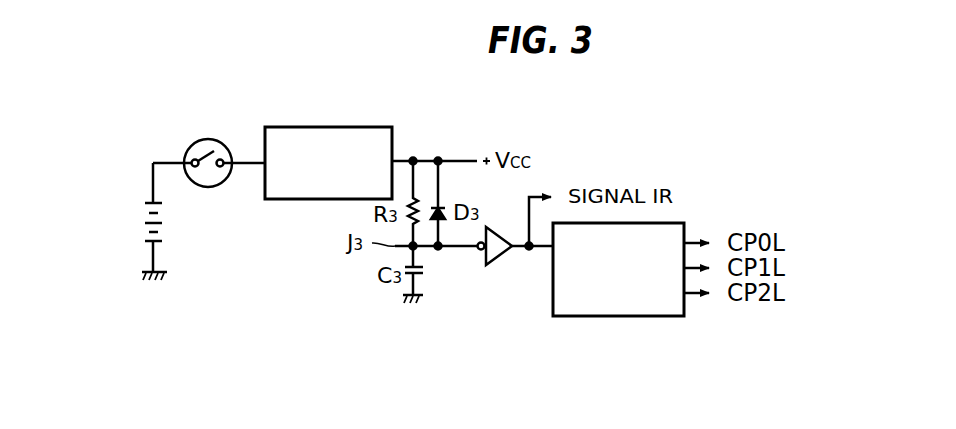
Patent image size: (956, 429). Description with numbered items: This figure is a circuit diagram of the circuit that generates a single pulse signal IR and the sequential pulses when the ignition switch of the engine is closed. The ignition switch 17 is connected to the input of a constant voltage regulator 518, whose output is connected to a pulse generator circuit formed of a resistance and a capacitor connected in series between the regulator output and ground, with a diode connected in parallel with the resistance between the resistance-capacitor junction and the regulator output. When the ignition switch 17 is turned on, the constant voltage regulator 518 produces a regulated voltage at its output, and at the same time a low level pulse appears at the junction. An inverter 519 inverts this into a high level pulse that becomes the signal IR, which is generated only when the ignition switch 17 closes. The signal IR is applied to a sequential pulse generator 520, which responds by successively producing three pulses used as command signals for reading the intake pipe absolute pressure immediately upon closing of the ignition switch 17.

The ignition switch 17 is at (208, 187).
The constant voltage regulator 518 is at (330, 127).
The inverter 519 is at (498, 265).
The sequential pulse generator 520 is at (620, 317).